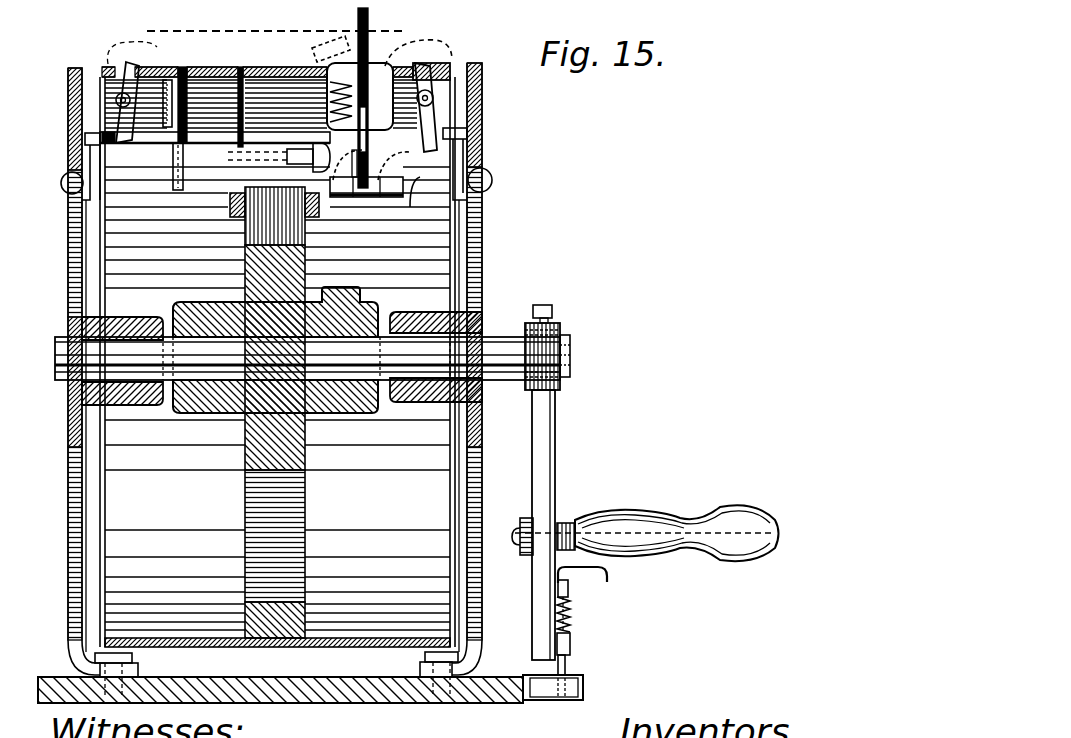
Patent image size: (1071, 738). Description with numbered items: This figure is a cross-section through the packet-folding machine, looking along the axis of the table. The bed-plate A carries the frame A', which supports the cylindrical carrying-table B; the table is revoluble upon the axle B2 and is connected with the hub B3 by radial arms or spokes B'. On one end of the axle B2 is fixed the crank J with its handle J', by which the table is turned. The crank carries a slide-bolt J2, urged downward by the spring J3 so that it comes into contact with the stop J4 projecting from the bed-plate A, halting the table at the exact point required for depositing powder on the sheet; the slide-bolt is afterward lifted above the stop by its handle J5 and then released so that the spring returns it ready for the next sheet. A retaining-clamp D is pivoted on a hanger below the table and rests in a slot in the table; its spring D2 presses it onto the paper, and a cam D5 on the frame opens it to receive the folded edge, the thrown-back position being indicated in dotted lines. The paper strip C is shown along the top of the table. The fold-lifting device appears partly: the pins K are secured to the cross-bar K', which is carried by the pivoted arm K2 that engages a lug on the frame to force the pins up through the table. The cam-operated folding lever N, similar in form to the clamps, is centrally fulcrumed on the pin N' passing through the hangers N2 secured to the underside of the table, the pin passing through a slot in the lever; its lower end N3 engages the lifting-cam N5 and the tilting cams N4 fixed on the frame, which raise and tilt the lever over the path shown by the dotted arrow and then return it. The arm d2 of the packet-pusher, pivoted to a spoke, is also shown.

The bed-plate A is at (280, 707).
The frame A' is at (269, 369).
The carrying-table B is at (276, 382).
The radial arms or spokes B' is at (263, 412).
The axle B2 is at (497, 343).
The hub B3 is at (337, 407).
The cover line C is at (278, 33).
The retaining-clamp D is at (140, 60).
The spring D2 is at (440, 55).
The cam D5 is at (85, 142).
The pins K is at (208, 112).
The cross-bar K' is at (187, 131).
The arm K2 is at (170, 157).
The arm d2 is at (313, 173).
The cam-operated lever N is at (359, 94).
The fulcrum-pin N' is at (360, 96).
The hangers N2 is at (366, 56).
The lower end of lever N3 is at (362, 197).
The tilting cams N4 is at (345, 198).
The lifting-cam N5 is at (413, 200).
The crank J is at (543, 525).
The handle J' is at (647, 512).
The slide-bolt J2 is at (565, 665).
The spring J3 is at (567, 617).
The stop J4 is at (583, 685).
The handle J5 is at (620, 583).